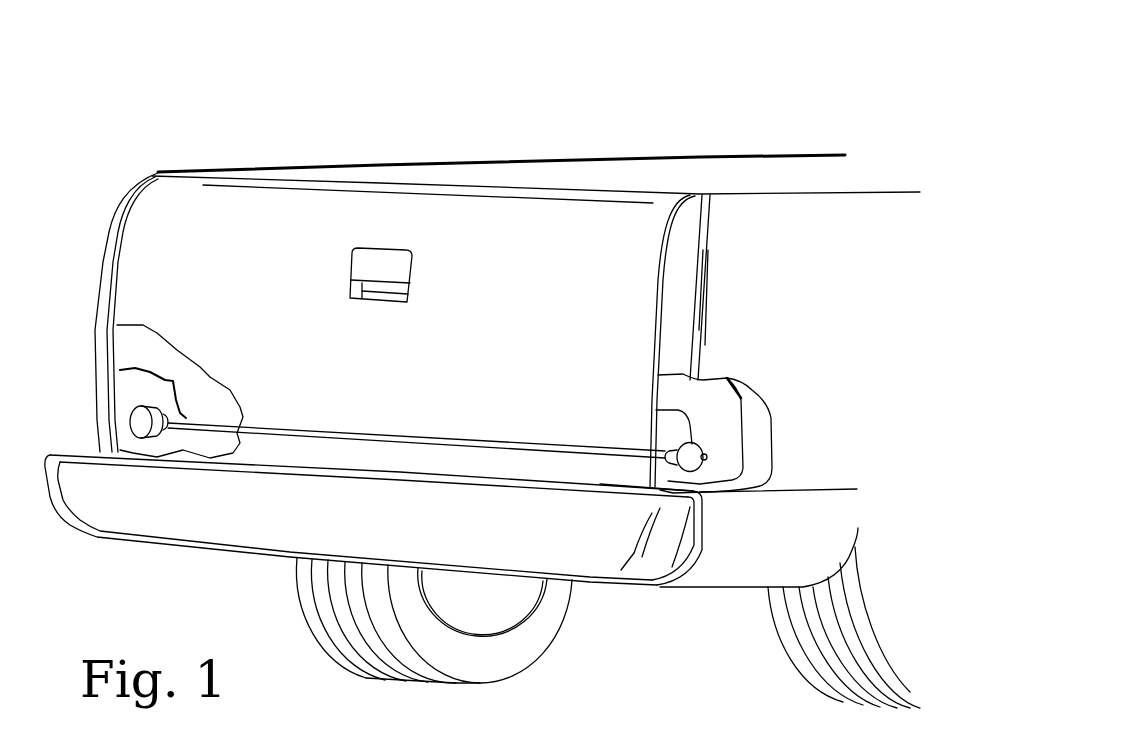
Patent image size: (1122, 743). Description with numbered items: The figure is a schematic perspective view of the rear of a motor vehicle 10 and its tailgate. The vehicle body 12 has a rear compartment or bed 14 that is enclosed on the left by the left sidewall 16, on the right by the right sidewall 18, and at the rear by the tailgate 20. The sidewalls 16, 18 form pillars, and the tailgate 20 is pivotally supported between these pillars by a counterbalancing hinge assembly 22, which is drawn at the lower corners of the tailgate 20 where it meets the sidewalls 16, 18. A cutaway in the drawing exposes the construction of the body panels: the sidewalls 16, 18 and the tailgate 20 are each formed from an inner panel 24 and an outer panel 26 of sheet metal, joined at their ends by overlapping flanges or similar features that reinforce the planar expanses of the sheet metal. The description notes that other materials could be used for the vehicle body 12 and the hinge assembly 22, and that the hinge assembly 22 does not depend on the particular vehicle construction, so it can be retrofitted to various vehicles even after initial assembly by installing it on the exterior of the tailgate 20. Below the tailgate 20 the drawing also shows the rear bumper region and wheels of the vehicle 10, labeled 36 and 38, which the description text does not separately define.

The motor vehicle 10 is at (240, 143).
The vehicle body 12 is at (98, 258).
The rear compartment or bed 14 is at (598, 188).
The left sidewall 16 is at (452, 163).
The right sidewall 18 is at (765, 191).
The tailgate 20 is at (598, 306).
The counterbalancing hinge assembly 22 is at (178, 407).
The inner panel 24 is at (746, 427).
The outer panel 26 is at (760, 388).
The bumper 36 is at (135, 478).
The bumper step 38 is at (627, 509).